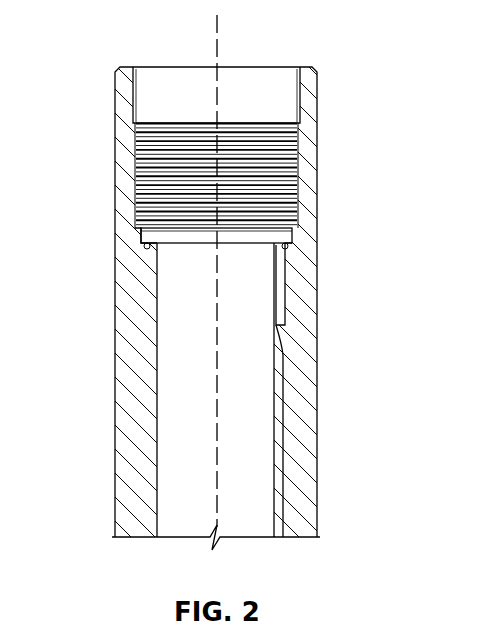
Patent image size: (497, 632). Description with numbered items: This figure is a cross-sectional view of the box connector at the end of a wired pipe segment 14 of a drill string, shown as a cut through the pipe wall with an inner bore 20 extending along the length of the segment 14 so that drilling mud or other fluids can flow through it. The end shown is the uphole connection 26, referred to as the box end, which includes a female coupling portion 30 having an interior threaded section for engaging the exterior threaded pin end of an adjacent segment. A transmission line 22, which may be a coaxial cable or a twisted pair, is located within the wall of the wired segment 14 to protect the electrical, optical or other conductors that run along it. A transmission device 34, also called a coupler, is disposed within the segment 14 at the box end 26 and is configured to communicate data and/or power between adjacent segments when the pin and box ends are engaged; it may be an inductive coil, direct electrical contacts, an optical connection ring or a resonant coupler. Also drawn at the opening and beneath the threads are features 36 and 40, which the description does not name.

The wired pipe segment 14 is at (122, 390).
The inner bore 20 is at (172, 462).
The transmission line 22 is at (283, 395).
The uphole connection 26 is at (213, 43).
The female coupling portion 30 is at (298, 172).
The transmission device 34 is at (150, 246).
The top opening 36 is at (301, 95).
The retaining ring 40 is at (293, 238).